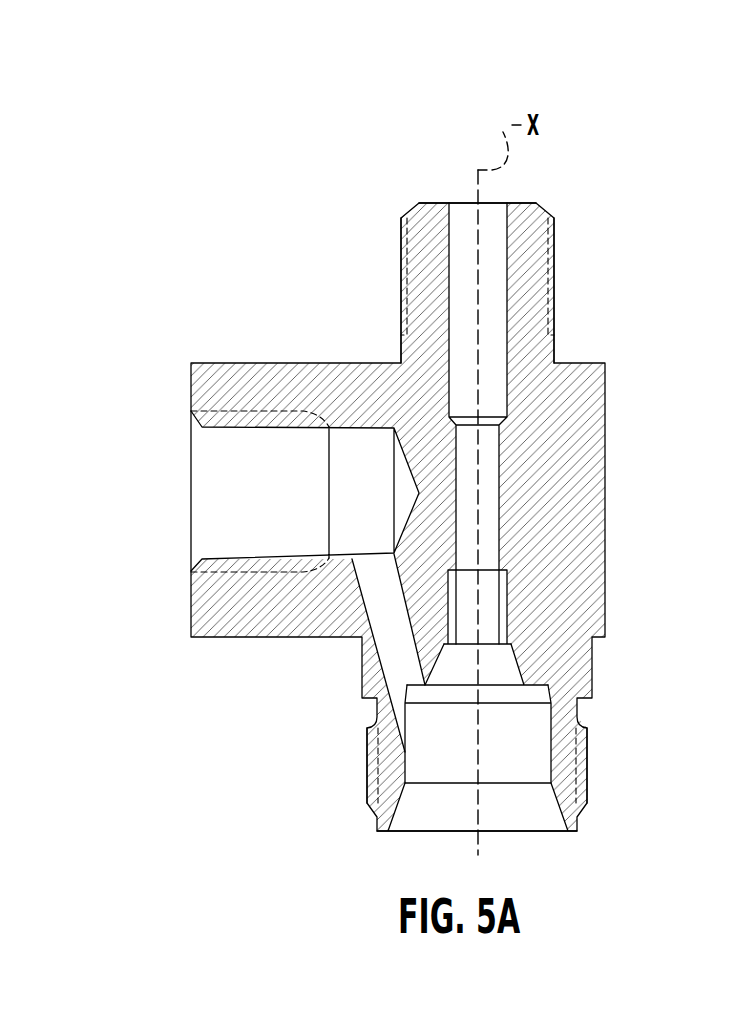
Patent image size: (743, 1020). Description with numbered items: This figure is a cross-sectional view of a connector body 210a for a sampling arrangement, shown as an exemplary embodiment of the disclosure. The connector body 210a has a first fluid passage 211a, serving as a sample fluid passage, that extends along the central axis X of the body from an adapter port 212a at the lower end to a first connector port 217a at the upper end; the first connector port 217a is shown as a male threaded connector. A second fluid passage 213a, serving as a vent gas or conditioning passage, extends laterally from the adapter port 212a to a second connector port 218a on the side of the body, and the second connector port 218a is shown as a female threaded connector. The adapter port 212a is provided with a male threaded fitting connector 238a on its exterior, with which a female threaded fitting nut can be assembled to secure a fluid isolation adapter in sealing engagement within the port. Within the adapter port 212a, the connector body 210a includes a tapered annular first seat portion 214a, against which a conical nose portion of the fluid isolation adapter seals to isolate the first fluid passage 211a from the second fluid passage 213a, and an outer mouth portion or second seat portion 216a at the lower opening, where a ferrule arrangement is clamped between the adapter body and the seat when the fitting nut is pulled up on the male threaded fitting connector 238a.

The connector body 210a is at (253, 191).
The first connector port 217a is at (520, 203).
The first fluid passage 211a is at (449, 347).
The tapered annular first seat portion 214a is at (516, 653).
The second connector port 218a is at (196, 533).
The second fluid passage 213a is at (410, 664).
The adapter port 212a is at (550, 730).
The male threaded fitting connector 238a is at (367, 775).
The second seat portion 216a is at (557, 808).